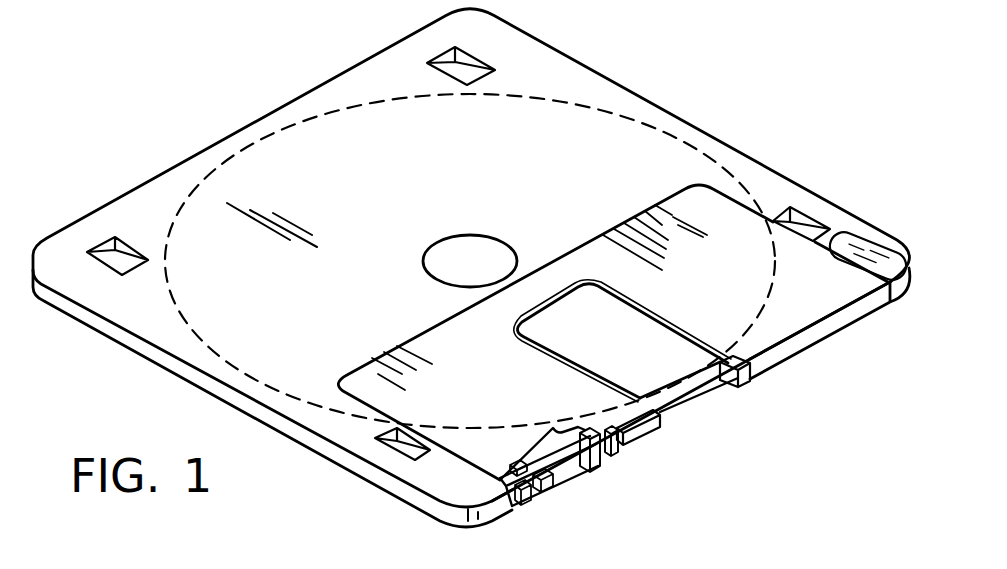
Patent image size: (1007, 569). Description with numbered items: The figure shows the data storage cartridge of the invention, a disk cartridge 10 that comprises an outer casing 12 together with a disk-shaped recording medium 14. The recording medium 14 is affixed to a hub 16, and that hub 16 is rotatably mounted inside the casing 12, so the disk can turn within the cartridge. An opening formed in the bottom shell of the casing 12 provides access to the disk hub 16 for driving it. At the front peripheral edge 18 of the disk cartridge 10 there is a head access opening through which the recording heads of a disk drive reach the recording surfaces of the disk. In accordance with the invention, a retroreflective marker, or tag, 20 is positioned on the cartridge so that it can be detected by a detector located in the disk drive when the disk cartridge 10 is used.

The disk cartridge 10 is at (311, 452).
The outer casing 12 is at (640, 95).
The disk-shaped recording medium 14 is at (697, 370).
The hub 16 is at (460, 236).
The front peripheral edge 18 is at (662, 410).
The retroreflective marker 20 is at (873, 245).